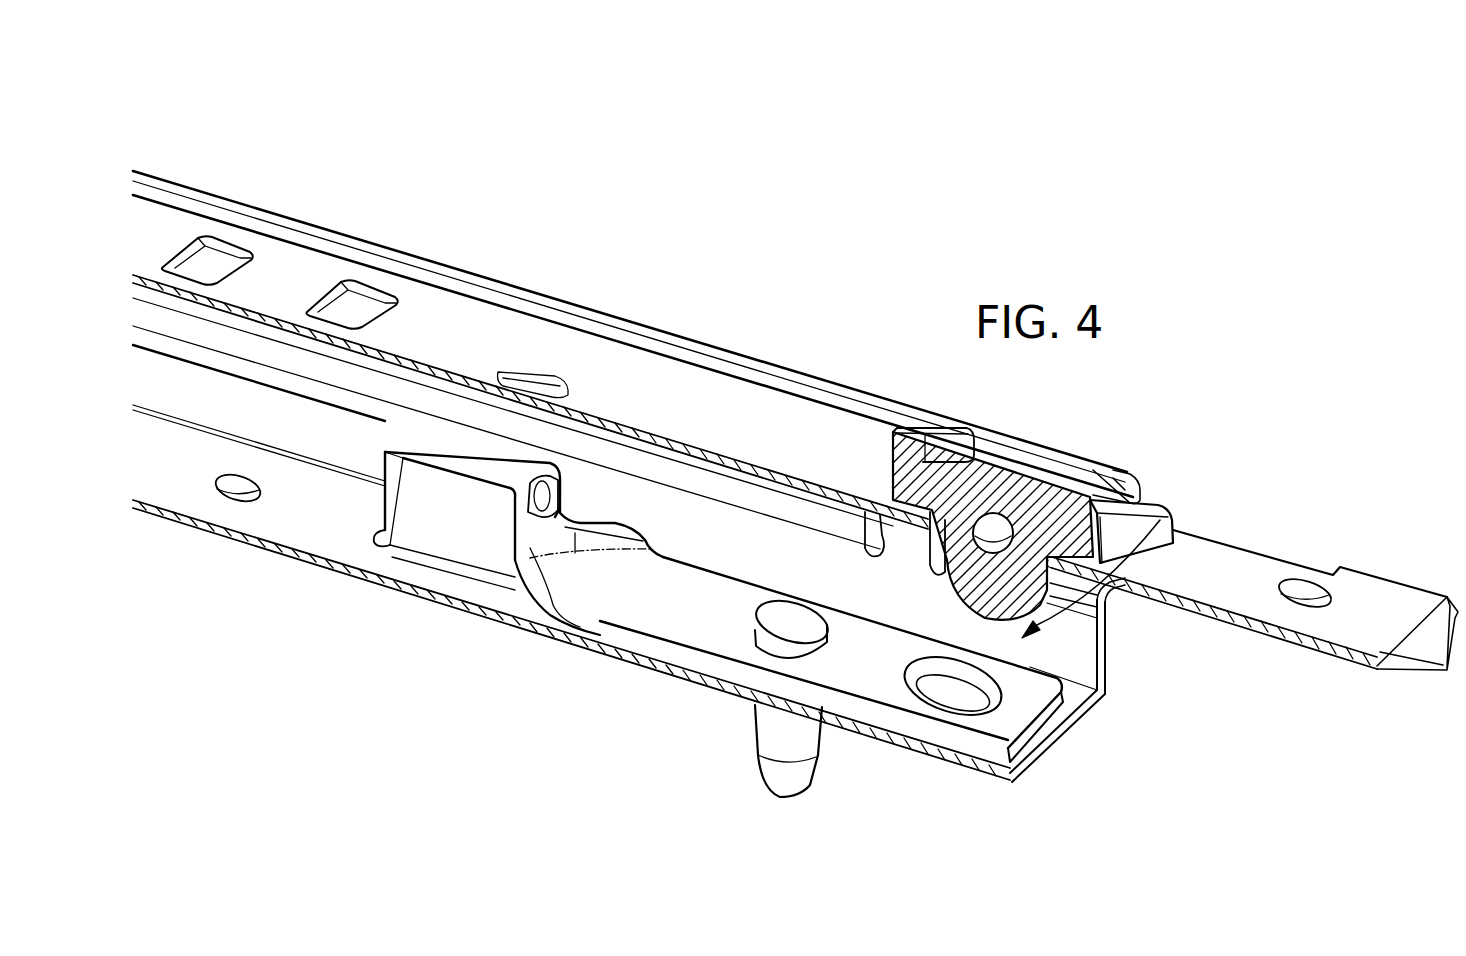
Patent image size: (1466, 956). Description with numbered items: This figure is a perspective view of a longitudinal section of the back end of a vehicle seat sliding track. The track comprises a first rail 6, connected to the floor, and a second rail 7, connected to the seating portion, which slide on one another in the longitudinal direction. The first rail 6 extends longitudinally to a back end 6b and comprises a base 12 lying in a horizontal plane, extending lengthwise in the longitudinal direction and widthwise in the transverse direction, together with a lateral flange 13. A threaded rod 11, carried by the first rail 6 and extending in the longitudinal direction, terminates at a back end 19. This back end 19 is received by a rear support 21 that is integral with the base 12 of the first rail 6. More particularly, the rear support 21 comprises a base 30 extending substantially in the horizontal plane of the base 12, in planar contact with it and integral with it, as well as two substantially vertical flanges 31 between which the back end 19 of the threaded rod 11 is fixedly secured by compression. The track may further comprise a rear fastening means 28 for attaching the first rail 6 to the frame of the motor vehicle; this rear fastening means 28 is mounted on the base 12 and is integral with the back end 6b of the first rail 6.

The second rail 7 is at (725, 408).
The threaded rod 11 is at (318, 437).
The back end of the threaded rod 19 is at (457, 453).
The vertical flanges 31 is at (558, 467).
The rear support 21 is at (637, 607).
The base of the rear support 30 is at (688, 628).
The rear fastening means 28 is at (785, 742).
The base of the first rail 12 is at (1040, 730).
The lateral flange of the first rail 13 is at (1102, 692).
The first rail 6 is at (1104, 642).
The back end of the first rail 6b is at (1160, 520).